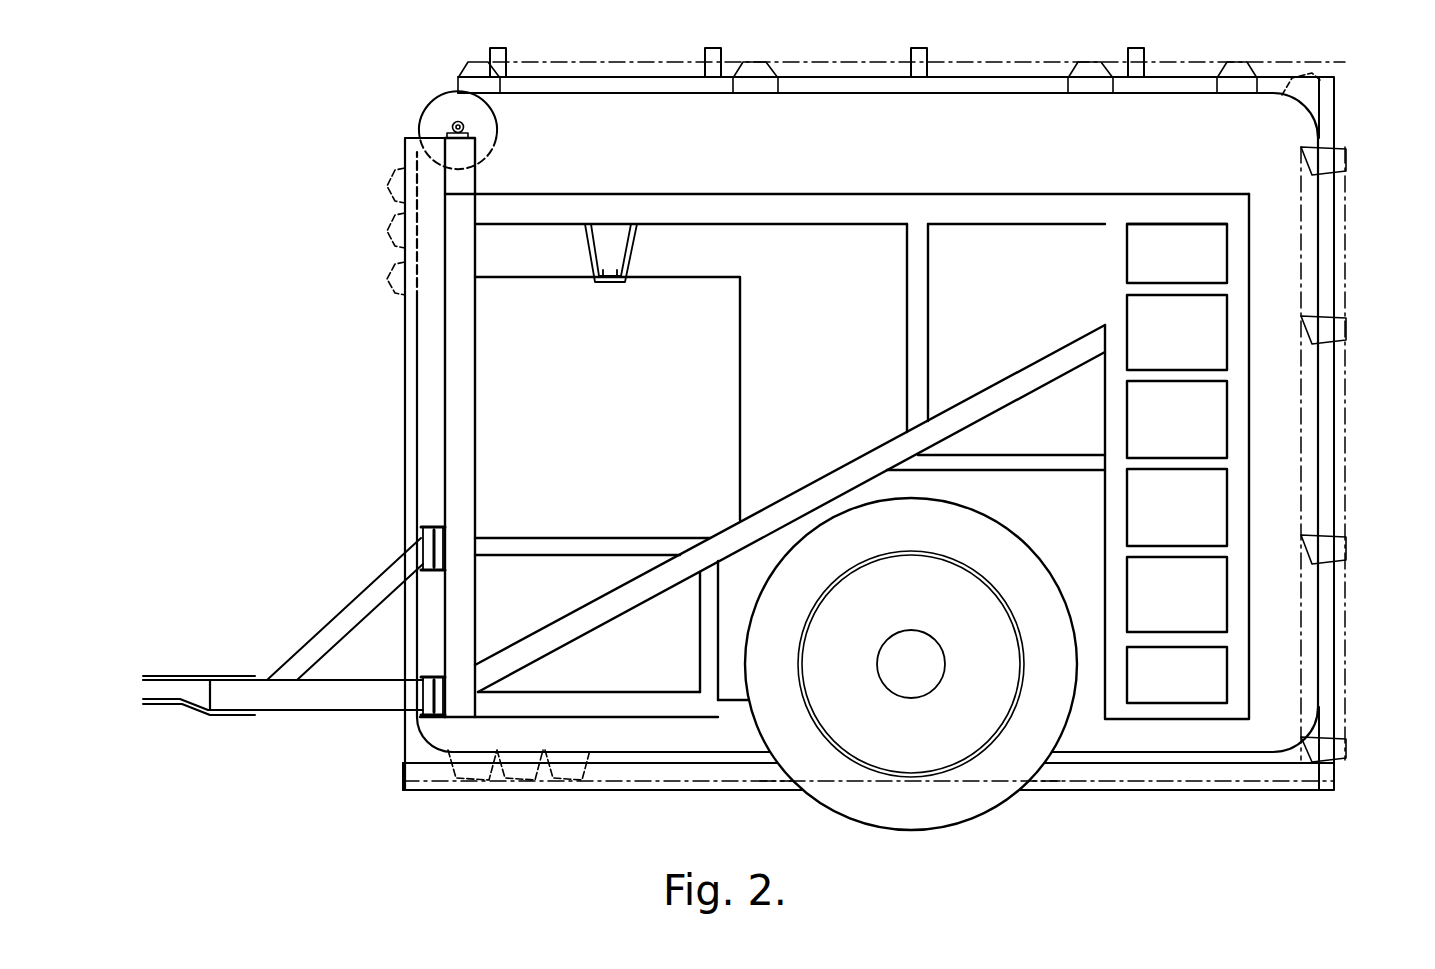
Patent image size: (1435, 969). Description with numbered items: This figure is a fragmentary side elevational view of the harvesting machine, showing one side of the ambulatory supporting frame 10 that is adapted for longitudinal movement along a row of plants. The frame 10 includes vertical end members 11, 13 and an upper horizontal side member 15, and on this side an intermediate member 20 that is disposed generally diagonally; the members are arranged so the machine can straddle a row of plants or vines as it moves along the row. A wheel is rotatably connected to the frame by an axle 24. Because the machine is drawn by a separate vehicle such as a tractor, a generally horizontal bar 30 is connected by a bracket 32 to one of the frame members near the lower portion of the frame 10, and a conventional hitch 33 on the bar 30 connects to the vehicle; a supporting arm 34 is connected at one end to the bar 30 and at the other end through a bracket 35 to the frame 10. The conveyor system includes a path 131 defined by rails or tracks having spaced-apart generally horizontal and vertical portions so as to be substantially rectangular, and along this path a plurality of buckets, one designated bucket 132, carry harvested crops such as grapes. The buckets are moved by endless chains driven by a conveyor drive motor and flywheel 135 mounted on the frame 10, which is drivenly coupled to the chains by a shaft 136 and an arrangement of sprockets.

The supporting frame 10 is at (440, 360).
The vertical end member 11 is at (460, 407).
The vertical end member 13 is at (1240, 458).
The upper horizontal side member 15 is at (925, 203).
The intermediate member 20 is at (858, 468).
The axle 24 is at (916, 653).
The horizontal bar 30 is at (307, 695).
The bracket 32 is at (428, 695).
The hitch 33 is at (152, 705).
The supporting arm 34 is at (347, 612).
The bracket 35 is at (428, 545).
The path 131 is at (666, 61).
The bucket 132 is at (757, 72).
The conveyor drive motor and flywheel 135 is at (445, 105).
The shaft 136 is at (450, 126).